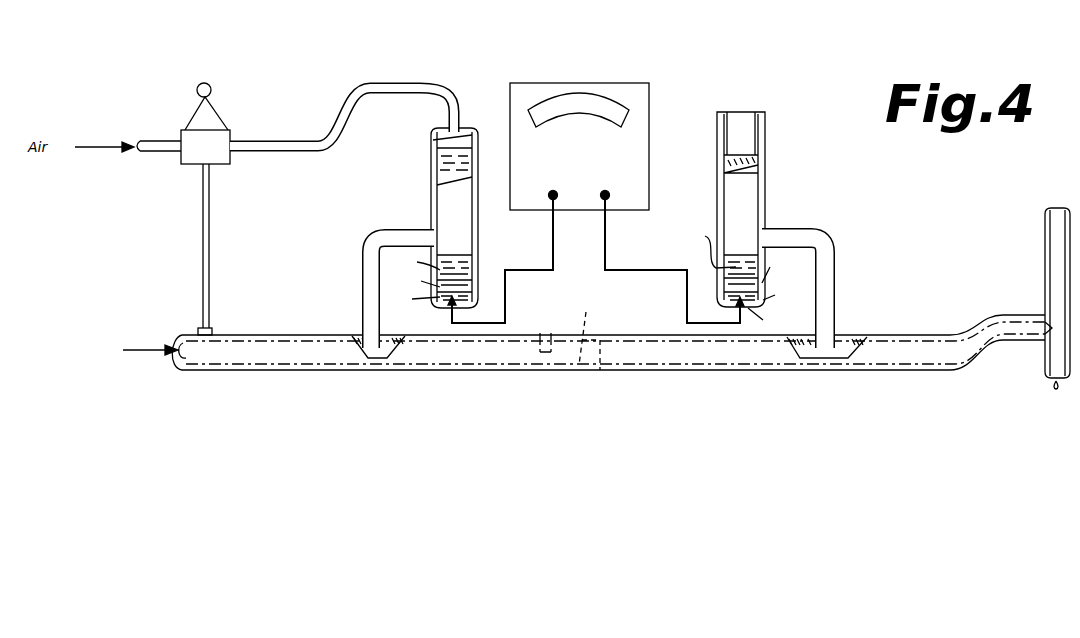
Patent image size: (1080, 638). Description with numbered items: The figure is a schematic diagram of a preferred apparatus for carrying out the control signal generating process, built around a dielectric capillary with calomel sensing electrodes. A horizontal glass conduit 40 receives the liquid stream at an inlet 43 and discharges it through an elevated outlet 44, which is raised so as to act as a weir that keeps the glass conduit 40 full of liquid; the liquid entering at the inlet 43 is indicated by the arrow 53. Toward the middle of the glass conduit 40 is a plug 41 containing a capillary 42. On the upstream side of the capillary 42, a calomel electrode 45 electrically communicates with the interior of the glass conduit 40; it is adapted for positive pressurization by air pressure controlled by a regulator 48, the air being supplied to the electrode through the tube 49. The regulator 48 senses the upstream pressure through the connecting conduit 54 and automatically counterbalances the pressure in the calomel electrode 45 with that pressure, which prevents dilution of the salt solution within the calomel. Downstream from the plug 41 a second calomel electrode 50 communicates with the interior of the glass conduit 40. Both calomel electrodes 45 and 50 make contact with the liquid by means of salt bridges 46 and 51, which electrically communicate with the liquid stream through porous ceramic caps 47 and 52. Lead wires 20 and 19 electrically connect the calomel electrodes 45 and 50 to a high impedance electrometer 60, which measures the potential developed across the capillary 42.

The lead wire 19 is at (607, 264).
The lead wire 20 is at (552, 233).
The glass conduit 40 is at (268, 336).
The plug 41 is at (534, 328).
The capillary 42 is at (580, 327).
The inlet 43 is at (183, 340).
The elevated outlet 44 is at (1022, 299).
The calomel electrode 45 is at (422, 190).
The salt bridge 46 is at (362, 264).
The porous ceramic cap 47 is at (370, 337).
The regulator 48 is at (192, 118).
The air supply tube 49 is at (318, 152).
The second calomel electrode 50 is at (785, 184).
The salt bridge 51 is at (832, 288).
The porous ceramic cap 52 is at (830, 342).
The liquid inlet flow 53 is at (146, 350).
The connecting conduit 54 is at (203, 222).
The high impedance electrometer 60 is at (623, 83).